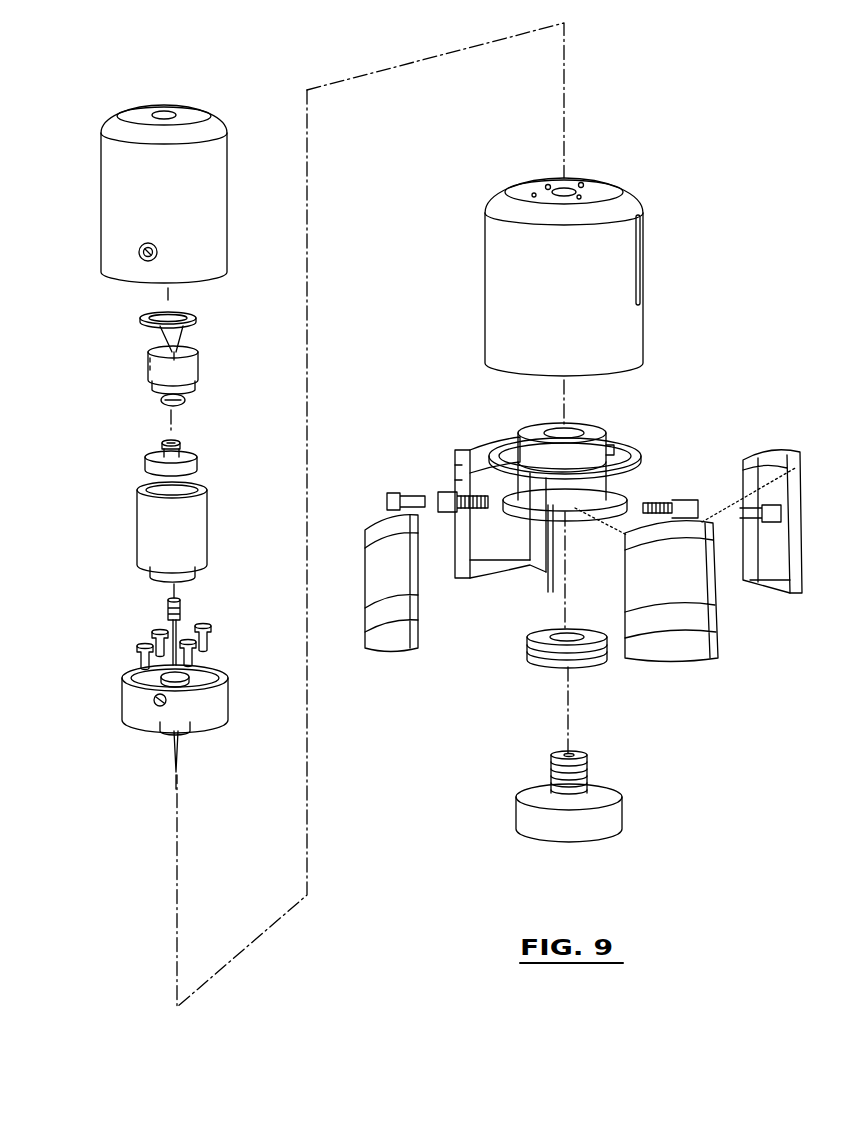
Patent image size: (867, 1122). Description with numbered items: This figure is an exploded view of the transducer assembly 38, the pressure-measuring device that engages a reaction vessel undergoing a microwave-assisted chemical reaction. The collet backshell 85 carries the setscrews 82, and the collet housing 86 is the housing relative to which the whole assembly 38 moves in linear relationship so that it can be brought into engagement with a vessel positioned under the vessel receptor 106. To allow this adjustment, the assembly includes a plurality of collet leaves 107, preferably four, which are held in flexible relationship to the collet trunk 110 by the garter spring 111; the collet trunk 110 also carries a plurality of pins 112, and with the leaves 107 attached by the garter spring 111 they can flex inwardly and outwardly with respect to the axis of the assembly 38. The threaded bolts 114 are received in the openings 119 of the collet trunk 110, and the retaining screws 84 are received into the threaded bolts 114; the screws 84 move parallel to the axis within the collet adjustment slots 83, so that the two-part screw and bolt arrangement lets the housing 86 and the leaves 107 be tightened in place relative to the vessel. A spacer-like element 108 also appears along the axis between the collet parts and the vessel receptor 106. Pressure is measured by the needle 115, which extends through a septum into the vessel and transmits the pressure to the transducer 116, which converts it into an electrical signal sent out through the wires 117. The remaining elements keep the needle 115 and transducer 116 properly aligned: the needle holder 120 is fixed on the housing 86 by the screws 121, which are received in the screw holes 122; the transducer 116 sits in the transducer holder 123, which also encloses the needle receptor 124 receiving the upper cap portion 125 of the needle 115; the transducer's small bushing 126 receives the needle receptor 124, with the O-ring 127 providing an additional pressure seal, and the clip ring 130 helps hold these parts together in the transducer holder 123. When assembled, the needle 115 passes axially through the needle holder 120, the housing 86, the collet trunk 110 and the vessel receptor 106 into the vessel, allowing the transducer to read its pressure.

The transducer assembly 38 is at (668, 69).
The setscrews 82 is at (155, 243).
The collet adjustment slots 83 is at (643, 248).
The retaining screws 84 is at (412, 497).
The collet backshell 85 is at (109, 188).
The collet housing 86 is at (637, 337).
The vessel receptor 106 is at (615, 817).
The collet leaves 107 is at (792, 568).
The spacer 108 is at (533, 660).
The collet trunk 110 is at (532, 433).
The garter spring 111 is at (635, 450).
The pins 112 is at (552, 590).
The threaded bolts 114 is at (660, 503).
The needle 115 is at (173, 750).
The transducer 116 is at (198, 368).
The wires 117 is at (172, 338).
The openings 119 is at (613, 450).
The needle holder 120 is at (127, 700).
The screws 121 is at (210, 635).
The screw holes 122 is at (592, 190).
The transducer holder 123 is at (142, 527).
The needle receptor 124 is at (147, 463).
The upper cap portion 125 is at (181, 608).
The bushing 126 is at (152, 384).
The O-ring 127 is at (185, 403).
The clip ring 130 is at (193, 318).